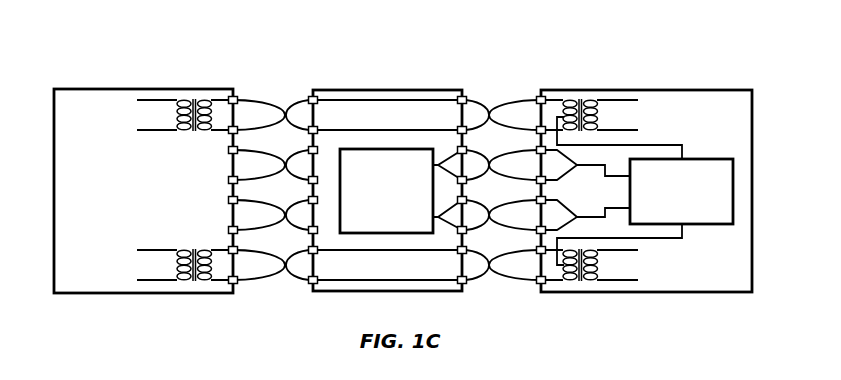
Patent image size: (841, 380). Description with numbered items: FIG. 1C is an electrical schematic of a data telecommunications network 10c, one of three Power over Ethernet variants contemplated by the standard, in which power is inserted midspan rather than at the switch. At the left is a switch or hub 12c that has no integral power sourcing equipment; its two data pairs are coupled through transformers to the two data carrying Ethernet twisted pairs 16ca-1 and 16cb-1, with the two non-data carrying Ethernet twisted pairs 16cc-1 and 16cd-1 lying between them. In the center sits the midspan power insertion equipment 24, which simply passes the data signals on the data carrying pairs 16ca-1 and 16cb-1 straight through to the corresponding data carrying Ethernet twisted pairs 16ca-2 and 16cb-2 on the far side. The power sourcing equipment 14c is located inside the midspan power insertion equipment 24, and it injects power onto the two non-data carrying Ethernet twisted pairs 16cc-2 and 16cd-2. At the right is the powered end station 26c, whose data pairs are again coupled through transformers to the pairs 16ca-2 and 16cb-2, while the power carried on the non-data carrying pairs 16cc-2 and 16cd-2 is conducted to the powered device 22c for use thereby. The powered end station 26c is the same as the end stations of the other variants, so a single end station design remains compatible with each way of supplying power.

The data telecommunications network 10c is at (488, 73).
The switch or hub 12c is at (208, 89).
The power sourcing equipment 14c is at (388, 149).
The data carrying Ethernet twisted pair 16ca-1 is at (238, 99).
The non-data carrying Ethernet twisted pair 16cc-1 is at (238, 149).
The non-data carrying Ethernet twisted pair 16cd-1 is at (238, 199).
The data carrying Ethernet twisted pair 16cb-1 is at (238, 249).
The data carrying Ethernet twisted pair 16ca-2 is at (536, 99).
The non-data carrying Ethernet twisted pair 16cc-2 is at (536, 149).
The non-data carrying Ethernet twisted pair 16cd-2 is at (536, 199).
The data carrying Ethernet twisted pair 16cb-2 is at (536, 249).
The powered device 22c is at (733, 192).
The midspan power insertion equipment 24 is at (378, 124).
The powered end station 26c is at (752, 268).